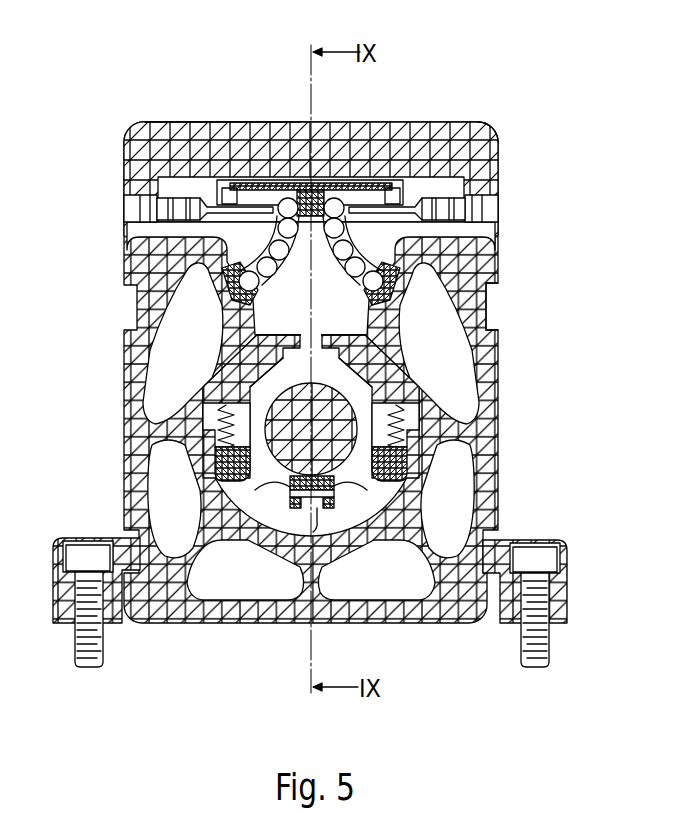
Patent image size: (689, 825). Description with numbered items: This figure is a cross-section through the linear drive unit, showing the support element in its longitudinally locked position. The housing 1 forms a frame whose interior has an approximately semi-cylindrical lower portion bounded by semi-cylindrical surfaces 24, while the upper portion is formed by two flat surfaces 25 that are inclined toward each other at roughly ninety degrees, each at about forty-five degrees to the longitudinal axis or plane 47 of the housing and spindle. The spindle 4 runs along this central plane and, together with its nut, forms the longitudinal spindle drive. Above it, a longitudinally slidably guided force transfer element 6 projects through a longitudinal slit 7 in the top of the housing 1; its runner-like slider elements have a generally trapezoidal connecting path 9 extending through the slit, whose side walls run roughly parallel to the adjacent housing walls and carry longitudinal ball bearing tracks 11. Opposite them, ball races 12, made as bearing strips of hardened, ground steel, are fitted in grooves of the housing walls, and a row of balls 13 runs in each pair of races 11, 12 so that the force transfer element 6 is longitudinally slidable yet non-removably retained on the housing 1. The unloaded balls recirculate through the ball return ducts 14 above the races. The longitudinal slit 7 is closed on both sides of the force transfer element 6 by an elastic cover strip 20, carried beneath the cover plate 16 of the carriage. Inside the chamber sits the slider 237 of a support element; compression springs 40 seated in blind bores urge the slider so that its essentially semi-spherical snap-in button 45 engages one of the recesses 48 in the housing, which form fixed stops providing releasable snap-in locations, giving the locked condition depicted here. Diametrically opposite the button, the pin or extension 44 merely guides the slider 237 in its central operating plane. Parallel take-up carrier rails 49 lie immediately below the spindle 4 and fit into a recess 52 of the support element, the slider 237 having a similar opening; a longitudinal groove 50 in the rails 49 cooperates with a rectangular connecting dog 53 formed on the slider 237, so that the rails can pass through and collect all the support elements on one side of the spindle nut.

The housing 1 is at (492, 405).
The spindle 4 is at (336, 424).
The force transfer element 6 is at (447, 122).
The longitudinal slit 7 is at (266, 322).
The connecting path 9 is at (315, 293).
The ball bearing tracks 11 is at (263, 285).
The ball races 12 is at (402, 284).
The balls 13 is at (238, 270).
The ball return ducts 14 is at (278, 183).
The cover plate 16 is at (150, 150).
The cover strip 20 is at (362, 181).
The semi-cylindrical surfaces 24 is at (300, 535).
The flat surfaces 25 is at (462, 346).
The compression springs 40 is at (220, 436).
The connecting dog 44 is at (327, 338).
The snap-in button projection 45 is at (290, 525).
The longitudinal axis or plane 47 is at (317, 383).
The recesses 48 is at (319, 508).
The take-up carrier rails 49 is at (335, 488).
The longitudinal groove 50 is at (245, 570).
The recess 52 is at (287, 487).
The rectangular connecting dog 53 is at (376, 570).
The slider 237 is at (388, 545).